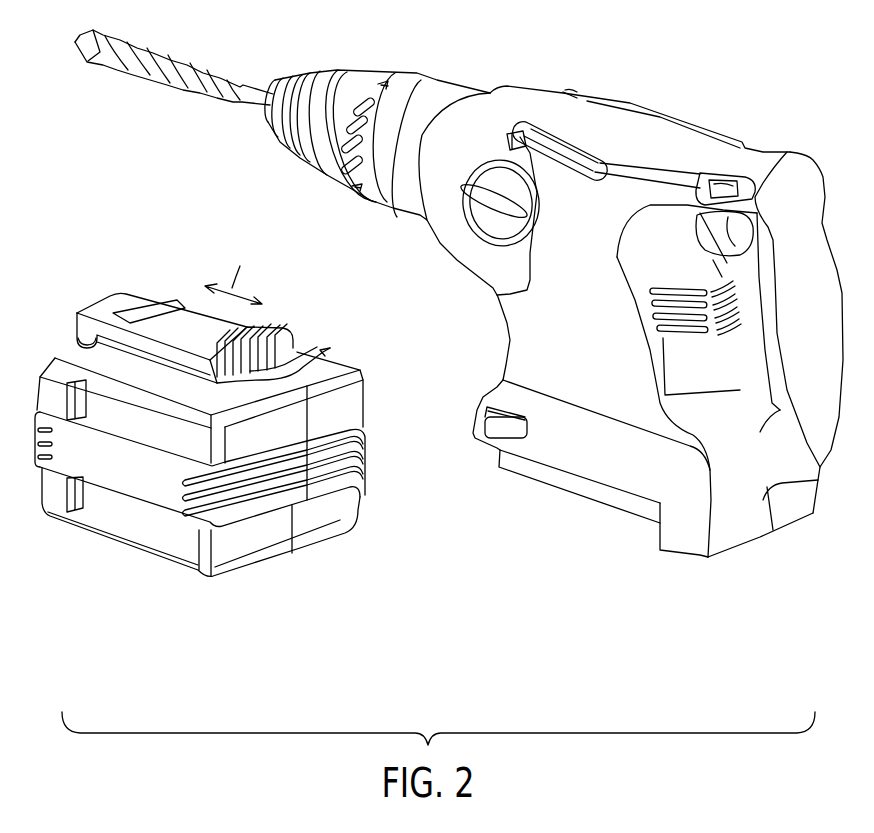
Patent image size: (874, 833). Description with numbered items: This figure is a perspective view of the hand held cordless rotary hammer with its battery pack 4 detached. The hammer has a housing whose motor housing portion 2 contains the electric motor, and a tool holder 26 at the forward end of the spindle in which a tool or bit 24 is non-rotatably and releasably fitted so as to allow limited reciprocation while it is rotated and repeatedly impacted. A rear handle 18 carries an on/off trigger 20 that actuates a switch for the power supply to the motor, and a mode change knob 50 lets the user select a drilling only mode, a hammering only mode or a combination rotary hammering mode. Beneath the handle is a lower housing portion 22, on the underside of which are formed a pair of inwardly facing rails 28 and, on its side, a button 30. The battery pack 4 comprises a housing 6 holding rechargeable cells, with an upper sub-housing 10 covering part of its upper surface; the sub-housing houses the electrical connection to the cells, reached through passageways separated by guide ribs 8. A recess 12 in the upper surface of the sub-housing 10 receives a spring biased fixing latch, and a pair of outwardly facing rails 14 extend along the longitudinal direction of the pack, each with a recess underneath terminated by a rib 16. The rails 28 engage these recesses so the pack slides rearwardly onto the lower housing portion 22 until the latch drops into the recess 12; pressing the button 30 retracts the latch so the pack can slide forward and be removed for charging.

The motor housing portion 2 is at (518, 318).
The battery pack 4 is at (121, 565).
The housing 6 is at (322, 530).
The guide ribs 8 is at (282, 361).
The upper sub-housing 10 is at (140, 295).
The recess 12 is at (176, 302).
The outwardly facing rails 14 is at (275, 323).
The rib 16 is at (80, 330).
The rear handle 18 is at (812, 282).
The on/off trigger 20 is at (708, 242).
The lower housing portion 22 is at (596, 458).
The tool or bit 24 is at (128, 70).
The tool holder 26 is at (378, 72).
The inwardly facing rails 28 is at (533, 470).
The button 30 is at (493, 442).
The mode change knob 50 is at (488, 222).